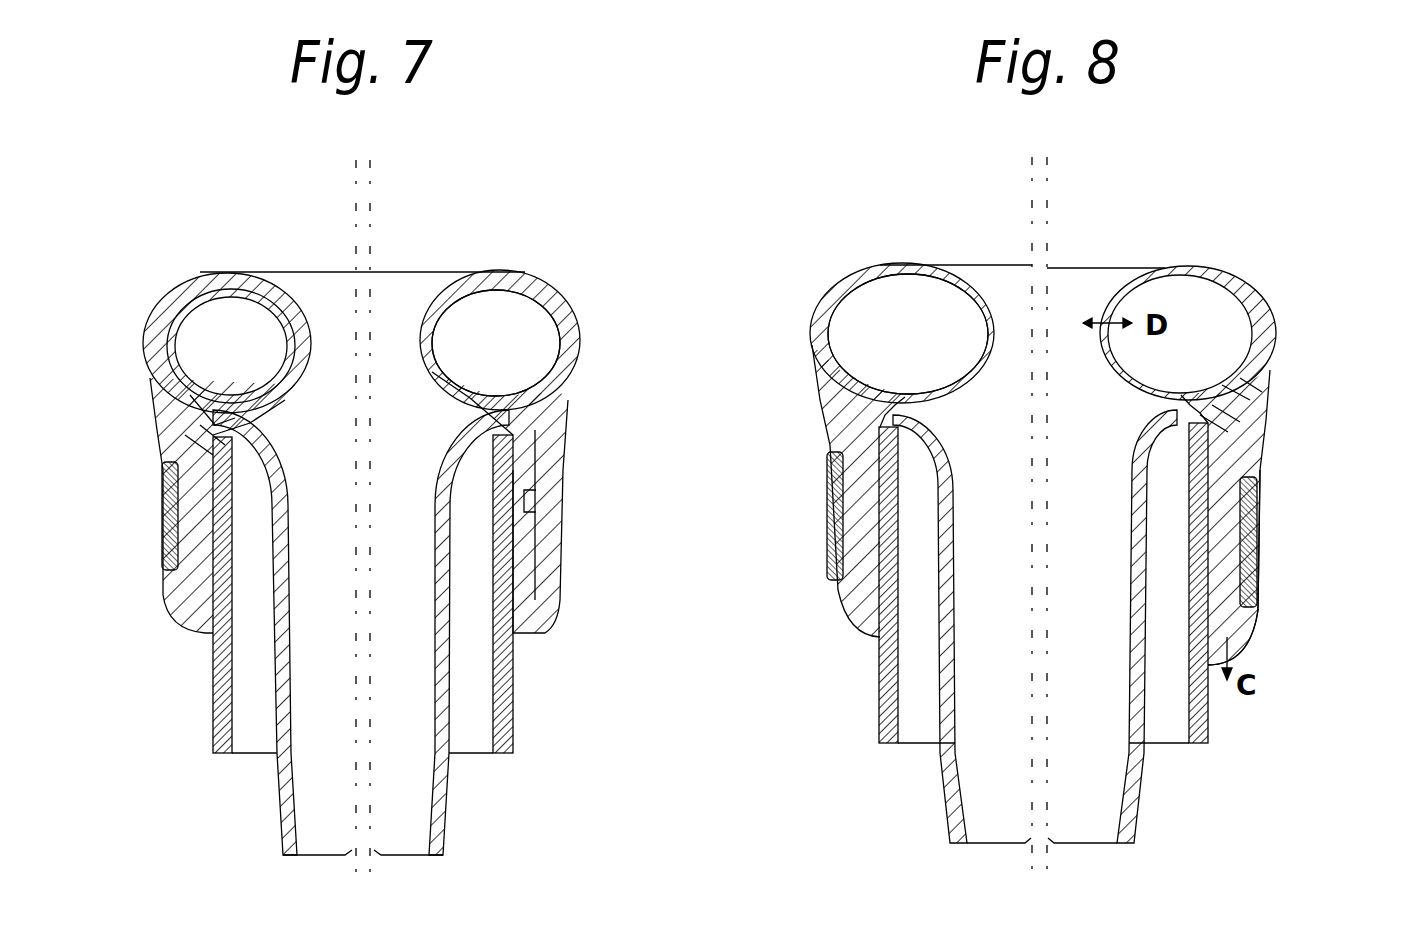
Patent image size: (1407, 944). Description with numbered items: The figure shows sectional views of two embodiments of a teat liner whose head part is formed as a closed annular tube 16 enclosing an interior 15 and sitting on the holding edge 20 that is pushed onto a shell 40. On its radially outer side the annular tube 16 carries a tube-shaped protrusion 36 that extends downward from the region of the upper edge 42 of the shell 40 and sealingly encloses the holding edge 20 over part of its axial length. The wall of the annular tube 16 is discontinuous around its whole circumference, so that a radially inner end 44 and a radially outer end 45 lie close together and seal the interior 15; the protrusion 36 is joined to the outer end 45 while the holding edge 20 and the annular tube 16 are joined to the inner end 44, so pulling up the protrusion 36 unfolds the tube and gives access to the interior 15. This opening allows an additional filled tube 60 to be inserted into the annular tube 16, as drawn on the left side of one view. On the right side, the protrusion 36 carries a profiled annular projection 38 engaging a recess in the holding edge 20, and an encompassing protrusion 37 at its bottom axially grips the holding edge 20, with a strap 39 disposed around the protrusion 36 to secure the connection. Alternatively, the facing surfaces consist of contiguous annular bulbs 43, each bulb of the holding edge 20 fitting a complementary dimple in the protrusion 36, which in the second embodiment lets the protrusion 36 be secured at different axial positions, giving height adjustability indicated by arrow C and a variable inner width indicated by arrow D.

In FIG. 7, the interior 15 is at (532, 362).
In FIG. 8, the interior 15 is at (878, 359).
In FIG. 7, the annular tube 16 is at (572, 327).
In FIG. 8, the annular tube 16 is at (815, 327).
In FIG. 7, the holding edge 20 is at (567, 502).
In FIG. 8, the holding edge 20 is at (860, 468).
In FIG. 7, the tube-shaped protrusion 36 is at (545, 400).
In FIG. 7, the encompassing protrusion 37 is at (540, 612).
In FIG. 7, the profiled annular projection 38 is at (530, 505).
In FIG. 7, the strap 39 is at (162, 500).
In FIG. 8, the strap 39 is at (1255, 538).
In FIG. 7, the shell 40 is at (513, 687).
In FIG. 7, the upper edge of the shell 42 is at (525, 434).
In FIG. 7, the annular bulbs 43 is at (170, 520).
In FIG. 8, the annular bulbs 43 is at (1255, 555).
In FIG. 7, the radially inner end 44 is at (190, 440).
In FIG. 8, the radially inner end 44 is at (1248, 390).
In FIG. 7, the radially outer end 45 is at (190, 403).
In FIG. 8, the radially outer end 45 is at (1236, 412).
In FIG. 7, the tube 60 is at (163, 292).